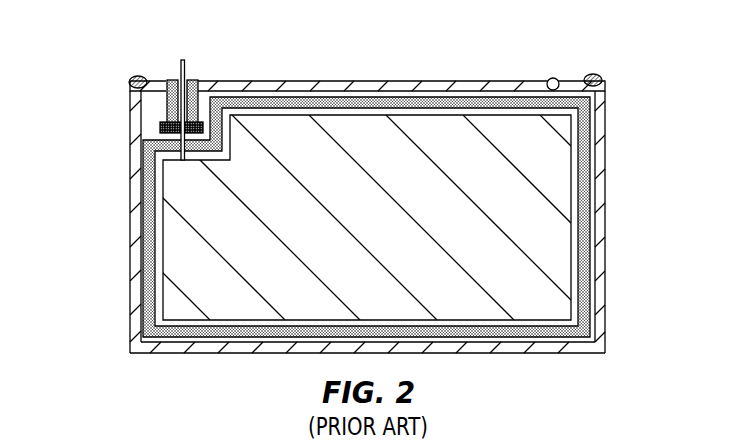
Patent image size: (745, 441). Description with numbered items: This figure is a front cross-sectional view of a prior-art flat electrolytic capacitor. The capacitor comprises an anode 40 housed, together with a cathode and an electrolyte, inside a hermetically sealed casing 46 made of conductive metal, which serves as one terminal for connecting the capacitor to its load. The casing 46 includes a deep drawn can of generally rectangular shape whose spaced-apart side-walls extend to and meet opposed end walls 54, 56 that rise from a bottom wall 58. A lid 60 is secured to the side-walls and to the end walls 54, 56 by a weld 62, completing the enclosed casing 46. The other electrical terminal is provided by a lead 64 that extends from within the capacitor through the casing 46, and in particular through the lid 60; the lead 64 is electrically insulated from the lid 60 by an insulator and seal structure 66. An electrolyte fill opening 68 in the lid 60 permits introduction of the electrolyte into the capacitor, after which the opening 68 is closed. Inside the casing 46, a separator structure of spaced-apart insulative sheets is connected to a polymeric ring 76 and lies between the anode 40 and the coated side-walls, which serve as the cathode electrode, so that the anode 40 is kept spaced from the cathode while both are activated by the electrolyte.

The anode 40 is at (192, 260).
The casing 46 is at (135, 323).
The end wall 54 is at (603, 145).
The end wall 56 is at (142, 150).
The bottom wall 58 is at (502, 348).
The lid 60 is at (318, 80).
The weld 62 is at (128, 78).
The lead 64 is at (187, 66).
The insulator and seal structure 66 is at (171, 77).
The electrolyte fill opening 68 is at (551, 78).
The polymeric ring 76 is at (586, 197).